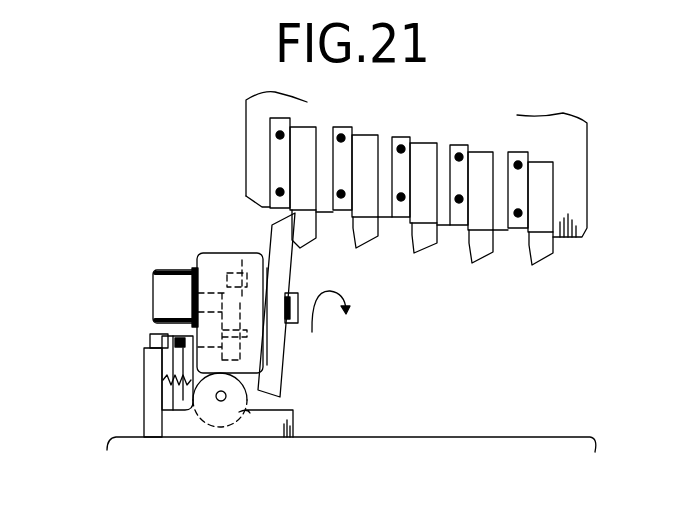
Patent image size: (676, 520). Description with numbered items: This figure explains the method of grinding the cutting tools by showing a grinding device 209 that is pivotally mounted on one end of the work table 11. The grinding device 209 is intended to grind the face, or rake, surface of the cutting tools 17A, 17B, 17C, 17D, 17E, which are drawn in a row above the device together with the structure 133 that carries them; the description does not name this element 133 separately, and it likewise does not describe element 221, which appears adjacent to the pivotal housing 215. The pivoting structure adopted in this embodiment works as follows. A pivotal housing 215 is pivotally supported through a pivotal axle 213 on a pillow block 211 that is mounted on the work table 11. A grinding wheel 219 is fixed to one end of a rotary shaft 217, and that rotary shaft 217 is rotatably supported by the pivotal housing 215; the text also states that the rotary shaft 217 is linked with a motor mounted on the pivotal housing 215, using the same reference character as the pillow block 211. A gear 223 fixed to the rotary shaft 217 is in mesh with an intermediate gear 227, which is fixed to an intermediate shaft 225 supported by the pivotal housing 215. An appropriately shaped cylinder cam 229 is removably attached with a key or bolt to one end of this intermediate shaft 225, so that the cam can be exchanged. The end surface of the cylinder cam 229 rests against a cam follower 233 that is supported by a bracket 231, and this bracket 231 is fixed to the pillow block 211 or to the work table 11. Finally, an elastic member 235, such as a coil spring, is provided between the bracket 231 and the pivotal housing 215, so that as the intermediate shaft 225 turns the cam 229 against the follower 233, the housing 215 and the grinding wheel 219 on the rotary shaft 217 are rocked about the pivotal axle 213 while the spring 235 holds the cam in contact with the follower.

The work table 11 is at (460, 446).
The key assembly frame 133 is at (592, 151).
The cutting tool 17A is at (296, 236).
The cutting tool 17B is at (355, 187).
The cutting tool 17C is at (414, 195).
The cutting tool 17D is at (480, 253).
The cutting tool 17E is at (541, 254).
The grinding device 209 is at (118, 256).
The pillow block 211 is at (255, 423).
The pivotal axle 213 is at (221, 398).
The pivotal housing 215 is at (210, 252).
The rotary shaft 217 is at (272, 276).
The grinding wheel 219 is at (280, 333).
The solenoid coil 221 is at (153, 292).
The gear 223 is at (240, 267).
The intermediate shaft 225 is at (262, 369).
The intermediate gear 227 is at (262, 388).
The cylinder cam 229 is at (163, 352).
The bracket 231 is at (144, 413).
The cam follower 233 is at (175, 340).
The elastic member 235 is at (163, 380).